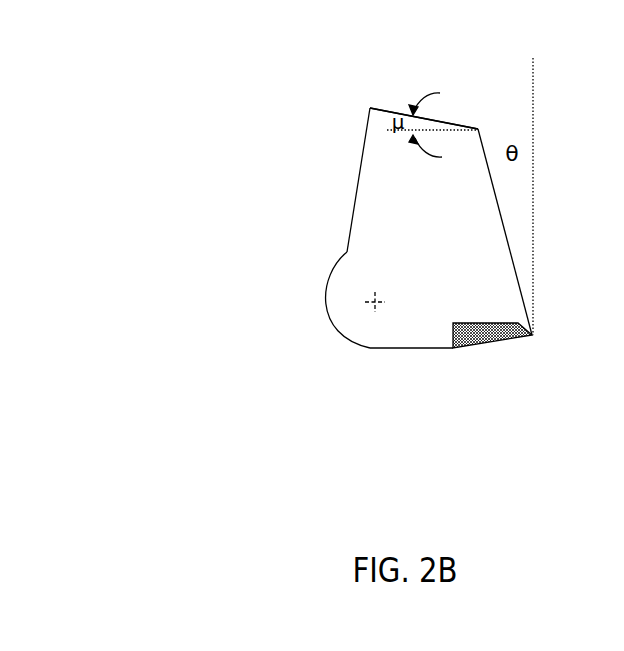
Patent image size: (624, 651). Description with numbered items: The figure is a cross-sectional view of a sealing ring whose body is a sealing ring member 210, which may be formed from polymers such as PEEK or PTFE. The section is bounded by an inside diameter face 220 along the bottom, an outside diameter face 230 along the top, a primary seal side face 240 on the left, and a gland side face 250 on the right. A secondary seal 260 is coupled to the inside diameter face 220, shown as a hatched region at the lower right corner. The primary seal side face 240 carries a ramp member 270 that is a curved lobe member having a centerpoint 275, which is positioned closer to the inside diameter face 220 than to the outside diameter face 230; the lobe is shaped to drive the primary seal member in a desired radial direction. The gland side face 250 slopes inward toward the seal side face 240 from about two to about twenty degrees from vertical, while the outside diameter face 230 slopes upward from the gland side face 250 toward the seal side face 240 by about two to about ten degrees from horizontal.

The sealing ring member 210 is at (366, 118).
The inside diameter face 220 is at (418, 352).
The outside diameter face 230 is at (449, 124).
The primary seal side face 240 is at (356, 187).
The gland side face 250 is at (497, 198).
The secondary seal 260 is at (500, 330).
The ramp member 270 is at (326, 298).
The centerpoint 275 is at (375, 312).